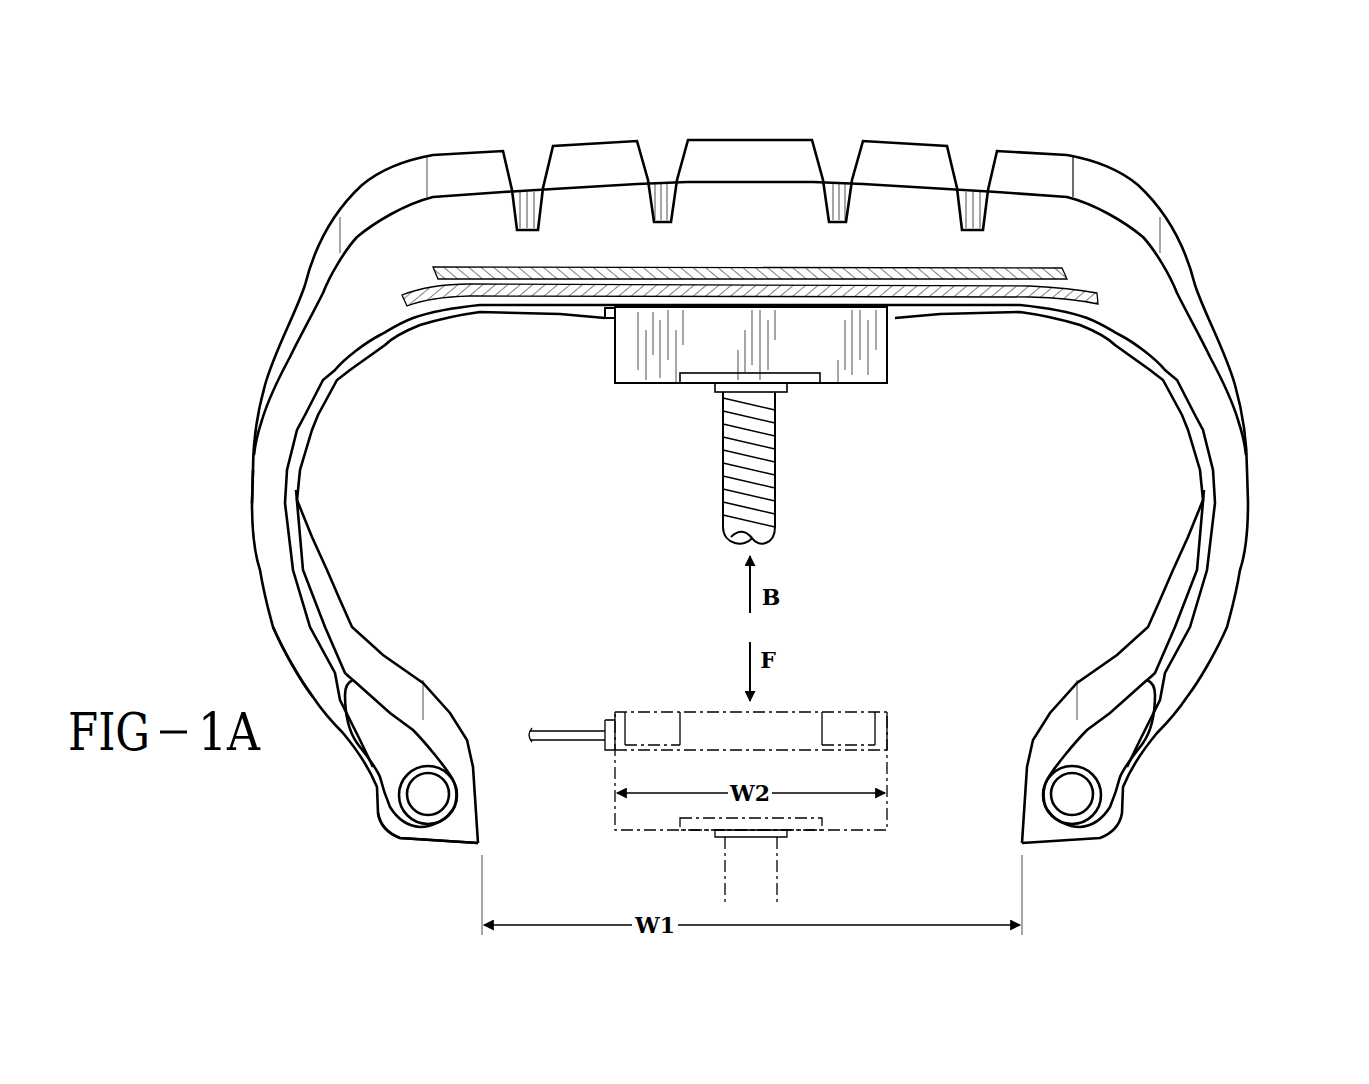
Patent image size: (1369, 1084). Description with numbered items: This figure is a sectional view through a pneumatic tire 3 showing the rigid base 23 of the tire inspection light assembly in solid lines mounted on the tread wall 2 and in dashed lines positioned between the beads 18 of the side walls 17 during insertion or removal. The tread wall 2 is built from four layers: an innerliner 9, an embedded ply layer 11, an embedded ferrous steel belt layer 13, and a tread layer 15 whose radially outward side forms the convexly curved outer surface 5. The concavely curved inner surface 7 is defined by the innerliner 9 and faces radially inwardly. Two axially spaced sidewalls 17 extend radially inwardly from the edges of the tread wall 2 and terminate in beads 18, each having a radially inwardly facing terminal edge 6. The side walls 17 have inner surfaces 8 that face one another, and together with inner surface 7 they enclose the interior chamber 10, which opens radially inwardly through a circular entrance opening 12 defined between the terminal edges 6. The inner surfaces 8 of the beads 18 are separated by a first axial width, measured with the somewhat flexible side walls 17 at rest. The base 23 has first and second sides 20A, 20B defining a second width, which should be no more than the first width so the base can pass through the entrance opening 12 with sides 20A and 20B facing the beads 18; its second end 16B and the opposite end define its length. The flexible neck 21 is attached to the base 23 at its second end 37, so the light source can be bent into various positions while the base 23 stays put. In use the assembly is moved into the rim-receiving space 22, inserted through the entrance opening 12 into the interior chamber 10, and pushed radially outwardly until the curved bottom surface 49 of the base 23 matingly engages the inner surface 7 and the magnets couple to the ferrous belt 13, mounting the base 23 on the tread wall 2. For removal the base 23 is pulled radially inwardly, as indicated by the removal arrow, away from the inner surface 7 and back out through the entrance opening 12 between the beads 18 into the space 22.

The tread wall 2 is at (459, 157).
The tire 3 is at (1066, 130).
The outer surface 5 is at (753, 152).
The terminal edge 6 is at (430, 840).
The inner surface 7 is at (975, 308).
The inner surfaces 8 is at (372, 658).
The innerliner 9 is at (913, 302).
The interior chamber 10 is at (350, 427).
The ply layer 11 is at (1086, 293).
The entrance opening 12 is at (993, 799).
The steel belt layer 13 is at (1030, 270).
The tread layer 15 is at (602, 208).
The second end 16B is at (827, 343).
The sidewalls 17 is at (265, 515).
The bead 18 is at (377, 792).
The first side 20A is at (615, 343).
The second side 20B is at (887, 350).
The neck 21 is at (780, 487).
The rim-receiving space 22 is at (440, 886).
The base 23 is at (627, 389).
The second end 37 is at (715, 401).
The bottom surface 49 is at (717, 305).